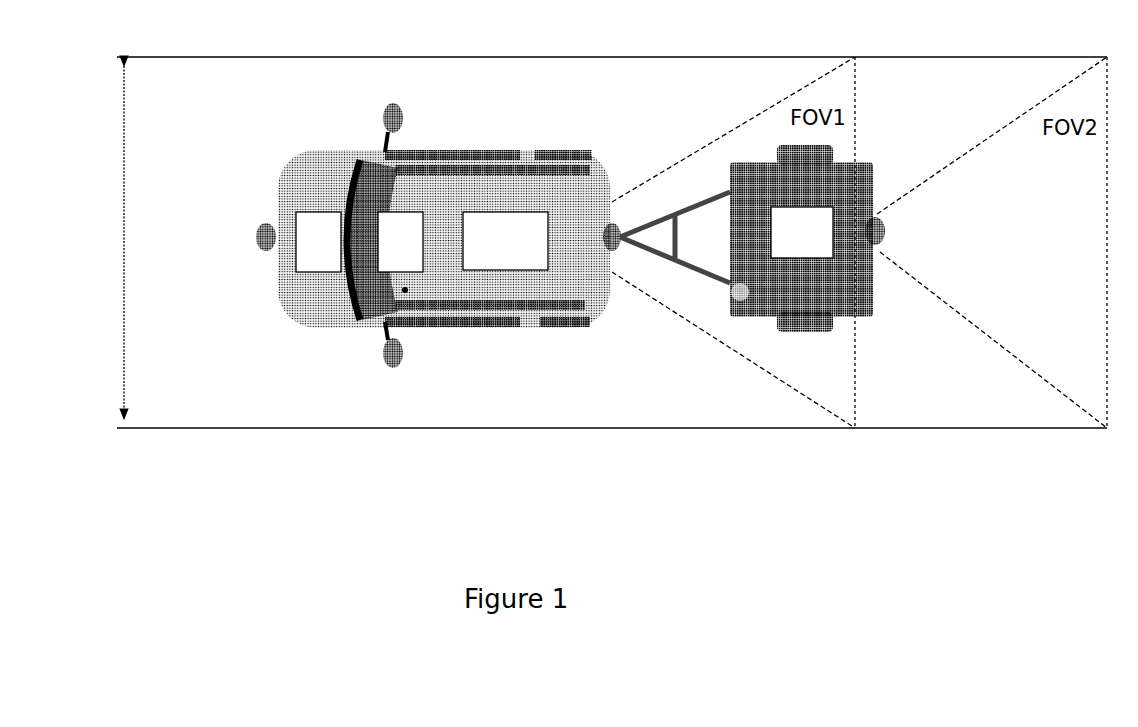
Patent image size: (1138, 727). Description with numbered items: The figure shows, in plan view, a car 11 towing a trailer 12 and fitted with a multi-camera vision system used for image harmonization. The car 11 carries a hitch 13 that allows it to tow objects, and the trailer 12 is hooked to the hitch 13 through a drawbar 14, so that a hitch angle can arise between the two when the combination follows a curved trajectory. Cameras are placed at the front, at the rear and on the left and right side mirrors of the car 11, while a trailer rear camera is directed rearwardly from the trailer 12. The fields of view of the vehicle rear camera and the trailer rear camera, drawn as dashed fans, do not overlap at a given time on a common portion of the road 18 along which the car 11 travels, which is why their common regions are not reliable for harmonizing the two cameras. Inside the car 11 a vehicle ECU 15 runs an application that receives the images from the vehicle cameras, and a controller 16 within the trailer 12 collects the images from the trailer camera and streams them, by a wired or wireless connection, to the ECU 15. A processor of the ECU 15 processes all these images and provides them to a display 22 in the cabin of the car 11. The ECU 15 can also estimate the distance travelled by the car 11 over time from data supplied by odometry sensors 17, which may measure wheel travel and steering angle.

The car 11 is at (273, 163).
The trailer 12 is at (855, 285).
The hitch 13 is at (626, 250).
The drawbar 14 is at (684, 195).
The vehicle ECU 15 is at (505, 241).
The controller 16 is at (802, 232).
The odometry sensors 17 is at (318, 242).
The road 18 is at (105, 242).
The display 22 is at (400, 242).